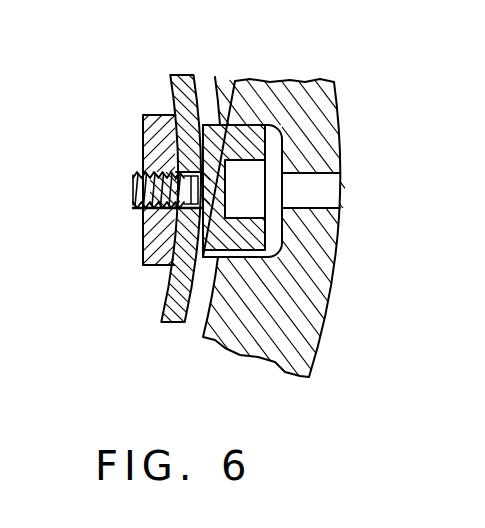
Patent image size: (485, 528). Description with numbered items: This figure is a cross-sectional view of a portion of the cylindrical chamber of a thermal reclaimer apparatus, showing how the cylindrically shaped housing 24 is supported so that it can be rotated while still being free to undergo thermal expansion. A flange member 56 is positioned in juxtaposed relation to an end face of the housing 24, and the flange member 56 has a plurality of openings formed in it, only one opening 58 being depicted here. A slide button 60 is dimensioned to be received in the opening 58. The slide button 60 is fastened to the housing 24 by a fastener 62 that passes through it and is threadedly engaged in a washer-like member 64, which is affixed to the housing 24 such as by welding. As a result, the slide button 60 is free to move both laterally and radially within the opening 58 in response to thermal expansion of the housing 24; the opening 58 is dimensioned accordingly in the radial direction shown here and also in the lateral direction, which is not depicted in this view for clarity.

The housing 24 is at (197, 84).
The flange member 56 is at (340, 173).
The opening 58 is at (282, 243).
The slide button 60 is at (256, 161).
The fastener 62 is at (133, 191).
The washer-like member 64 is at (151, 268).